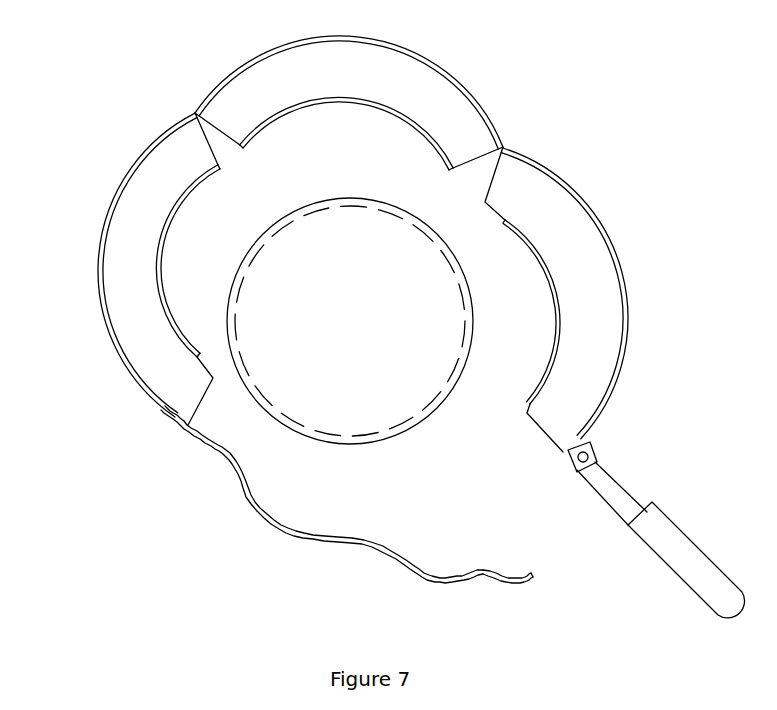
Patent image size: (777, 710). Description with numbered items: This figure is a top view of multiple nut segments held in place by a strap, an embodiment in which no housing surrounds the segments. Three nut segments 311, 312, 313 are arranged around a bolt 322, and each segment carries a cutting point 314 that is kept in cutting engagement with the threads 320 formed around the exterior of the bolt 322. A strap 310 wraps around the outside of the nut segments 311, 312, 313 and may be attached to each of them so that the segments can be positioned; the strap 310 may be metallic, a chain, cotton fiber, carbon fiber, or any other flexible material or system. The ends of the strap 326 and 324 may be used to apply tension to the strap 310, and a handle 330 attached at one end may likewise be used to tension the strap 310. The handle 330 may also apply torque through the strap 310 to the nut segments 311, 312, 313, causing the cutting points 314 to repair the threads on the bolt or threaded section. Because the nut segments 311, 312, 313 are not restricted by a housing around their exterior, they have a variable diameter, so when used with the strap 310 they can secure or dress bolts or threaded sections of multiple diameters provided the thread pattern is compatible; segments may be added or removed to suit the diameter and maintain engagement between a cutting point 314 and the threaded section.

The strap 310 is at (376, 321).
The nut segment 311 is at (595, 298).
The nut segment 312 is at (402, 82).
The nut segment 313 is at (152, 193).
The cutting point 314 is at (196, 358).
The threads 320 is at (443, 250).
The bolt 322 is at (400, 305).
The strap end 324 is at (590, 443).
The strap end 326 is at (531, 576).
The handle 330 is at (650, 525).